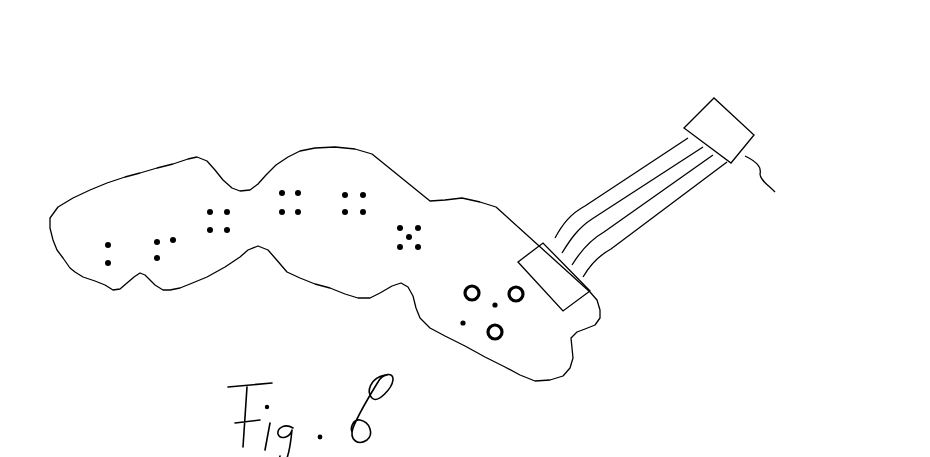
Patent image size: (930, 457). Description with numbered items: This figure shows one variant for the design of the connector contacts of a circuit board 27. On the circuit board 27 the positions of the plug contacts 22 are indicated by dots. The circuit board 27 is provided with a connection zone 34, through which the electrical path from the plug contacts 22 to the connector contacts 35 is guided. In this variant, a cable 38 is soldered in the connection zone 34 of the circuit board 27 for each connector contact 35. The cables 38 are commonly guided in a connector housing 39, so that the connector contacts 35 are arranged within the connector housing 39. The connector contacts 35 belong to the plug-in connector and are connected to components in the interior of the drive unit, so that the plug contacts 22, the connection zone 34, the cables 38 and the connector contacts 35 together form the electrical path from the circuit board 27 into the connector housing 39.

The plug contacts 22 is at (285, 196).
The circuit board 27 is at (344, 150).
The connection zone 34 is at (528, 254).
The cable 38 is at (620, 181).
The connector contacts 35 is at (732, 110).
The connector housing 39 is at (790, 183).